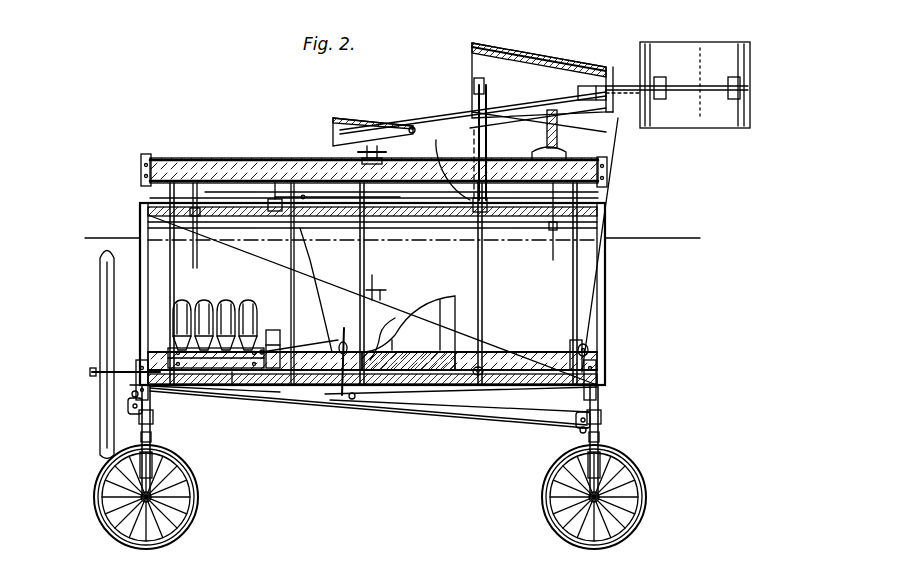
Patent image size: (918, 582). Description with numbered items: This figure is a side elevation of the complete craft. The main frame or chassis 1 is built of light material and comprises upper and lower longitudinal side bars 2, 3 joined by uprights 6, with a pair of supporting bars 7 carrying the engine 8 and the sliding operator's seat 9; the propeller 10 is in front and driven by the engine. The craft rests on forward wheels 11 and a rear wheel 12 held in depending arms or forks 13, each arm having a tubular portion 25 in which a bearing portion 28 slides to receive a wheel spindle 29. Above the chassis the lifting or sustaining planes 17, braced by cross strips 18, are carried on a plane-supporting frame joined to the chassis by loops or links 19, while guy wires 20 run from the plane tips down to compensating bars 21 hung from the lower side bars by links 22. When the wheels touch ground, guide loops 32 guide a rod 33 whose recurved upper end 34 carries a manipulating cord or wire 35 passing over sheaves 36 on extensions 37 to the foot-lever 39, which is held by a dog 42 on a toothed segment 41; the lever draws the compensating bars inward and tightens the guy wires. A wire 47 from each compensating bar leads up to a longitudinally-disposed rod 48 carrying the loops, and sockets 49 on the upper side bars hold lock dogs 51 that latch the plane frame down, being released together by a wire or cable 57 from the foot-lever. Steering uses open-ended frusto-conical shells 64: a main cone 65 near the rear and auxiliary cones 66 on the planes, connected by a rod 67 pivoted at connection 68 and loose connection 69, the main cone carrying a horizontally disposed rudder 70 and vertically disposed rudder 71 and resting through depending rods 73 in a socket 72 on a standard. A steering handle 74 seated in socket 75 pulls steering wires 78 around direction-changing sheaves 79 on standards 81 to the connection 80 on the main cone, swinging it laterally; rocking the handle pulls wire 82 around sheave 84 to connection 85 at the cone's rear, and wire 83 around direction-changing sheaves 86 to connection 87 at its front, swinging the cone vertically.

The main frame or chassis 1 is at (598, 276).
The upper longitudinal side bars 2 is at (240, 218).
The lower longitudinal side bars 3 is at (520, 380).
The uprights 6 is at (139, 270).
The supporting bars 7 is at (232, 386).
The engine 8 is at (258, 342).
The operator's seat 9 is at (408, 333).
The propeller 10 is at (99, 372).
The forward wheels 11 is at (178, 543).
The rear wheel 12 is at (640, 518).
The arms or forks 13 is at (152, 467).
The lifting or sustaining planes 17 is at (258, 166).
The cross strips 18 is at (152, 157).
The loops or links 19 is at (203, 198).
The guy wires 20 is at (175, 268).
The compensating bars 21 is at (138, 388).
The links 22 is at (205, 386).
The tubular portion 25 is at (136, 462).
The bearing portion 28 is at (100, 500).
The wheel spindle 29 is at (152, 497).
The guide loops 32 is at (153, 426).
The rod 33 is at (152, 440).
The recurved upper end 34 is at (142, 360).
The manipulating cord or wire 35 is at (142, 395).
The sheaves 36 is at (578, 428).
The extensions 37 is at (128, 410).
The foot-lever 39 is at (340, 350).
The toothed segment 41 is at (322, 408).
The dog 42 is at (353, 400).
The wire 47 is at (511, 278).
The longitudinally-disposed rod 48 is at (447, 230).
The sockets 49 is at (275, 212).
The lock dog 51 is at (268, 198).
The wire or cable 57 is at (408, 402).
The frusto-conical shells 64 is at (469, 94).
The main cone 65 is at (588, 66).
The auxiliary cones 66 is at (372, 130).
The rod 67 is at (450, 122).
The pivotal connection 68 is at (410, 127).
The loose connection 69 is at (592, 86).
The horizontally disposed rudder 70 is at (703, 128).
The vertically disposed rudder 71 is at (732, 122).
The socket 72 is at (566, 156).
The depending rods 73 is at (557, 136).
The steering handle 74 is at (385, 290).
The socket 75 is at (388, 335).
The steering wires 78 is at (430, 392).
The direction-changing sheaves 79 is at (482, 368).
The connection 80 is at (553, 221).
The standards 81 is at (489, 134).
The wire 82 is at (542, 370).
The wire 83 is at (295, 291).
The direction-changing sheave 84 is at (590, 350).
The connection 85 is at (613, 122).
The direction-changing sheaves 86 is at (383, 246).
The connection 87 is at (474, 132).